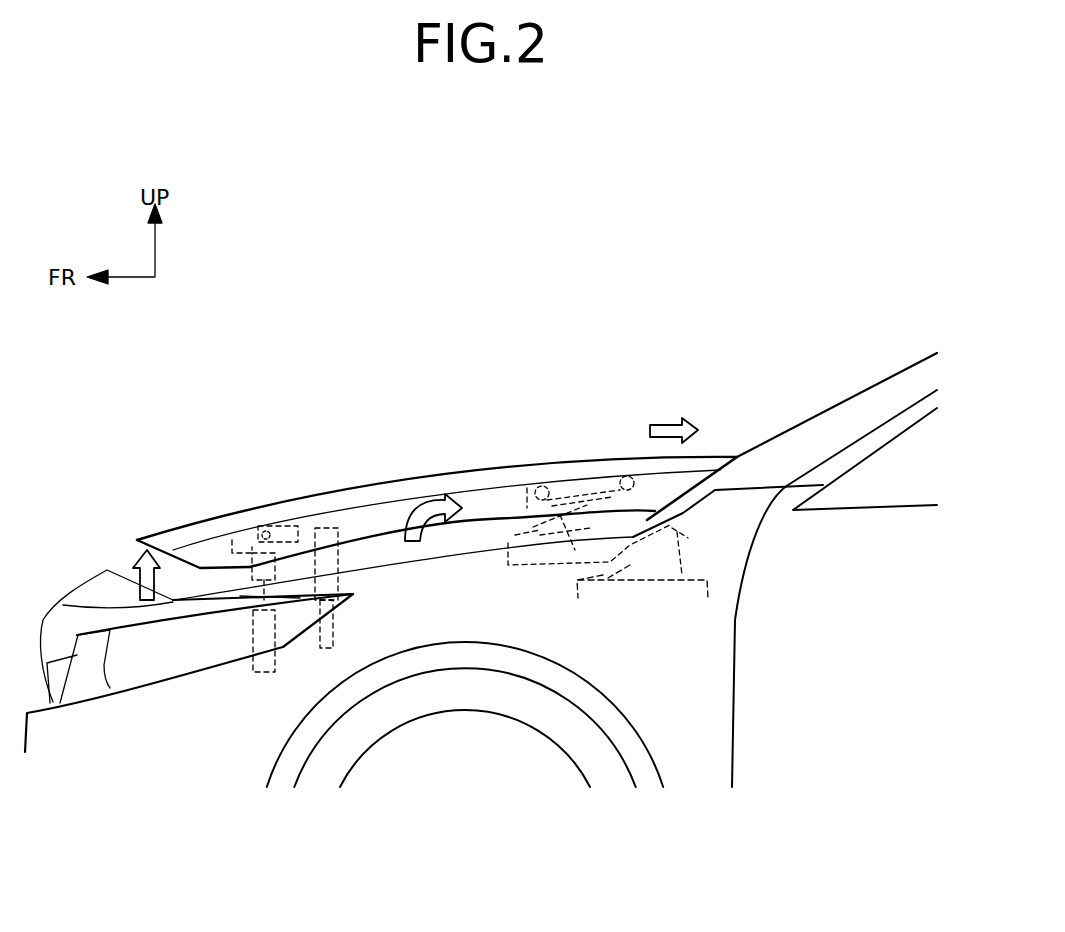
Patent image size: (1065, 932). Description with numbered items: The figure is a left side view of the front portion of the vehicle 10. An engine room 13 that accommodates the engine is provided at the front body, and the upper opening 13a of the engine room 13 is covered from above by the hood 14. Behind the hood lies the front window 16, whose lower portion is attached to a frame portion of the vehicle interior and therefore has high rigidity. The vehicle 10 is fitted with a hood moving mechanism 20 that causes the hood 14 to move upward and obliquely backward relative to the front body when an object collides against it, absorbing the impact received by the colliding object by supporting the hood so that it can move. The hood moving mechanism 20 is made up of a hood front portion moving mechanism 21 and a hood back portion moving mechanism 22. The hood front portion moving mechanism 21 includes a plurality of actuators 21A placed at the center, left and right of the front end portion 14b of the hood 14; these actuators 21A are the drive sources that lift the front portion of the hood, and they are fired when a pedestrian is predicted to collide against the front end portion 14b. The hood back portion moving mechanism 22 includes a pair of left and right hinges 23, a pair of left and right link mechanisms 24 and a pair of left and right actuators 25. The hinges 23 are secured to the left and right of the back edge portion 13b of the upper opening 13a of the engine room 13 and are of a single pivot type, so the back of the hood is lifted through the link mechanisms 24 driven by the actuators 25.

The vehicle 10 is at (346, 345).
The engine room 13 is at (496, 526).
The upper opening 13a is at (473, 548).
The back edge portion 13b is at (700, 565).
The hood 14 is at (386, 465).
The front end portion 14b is at (163, 528).
The front window 16 is at (862, 400).
The hood moving mechanism 20 is at (270, 443).
The hood front portion moving mechanism 21 is at (249, 529).
The actuators 21A is at (316, 528).
The hood back portion moving mechanism 22 is at (631, 456).
The hinges 23 is at (695, 578).
The link mechanisms 24 is at (583, 467).
The actuators 25 is at (522, 540).